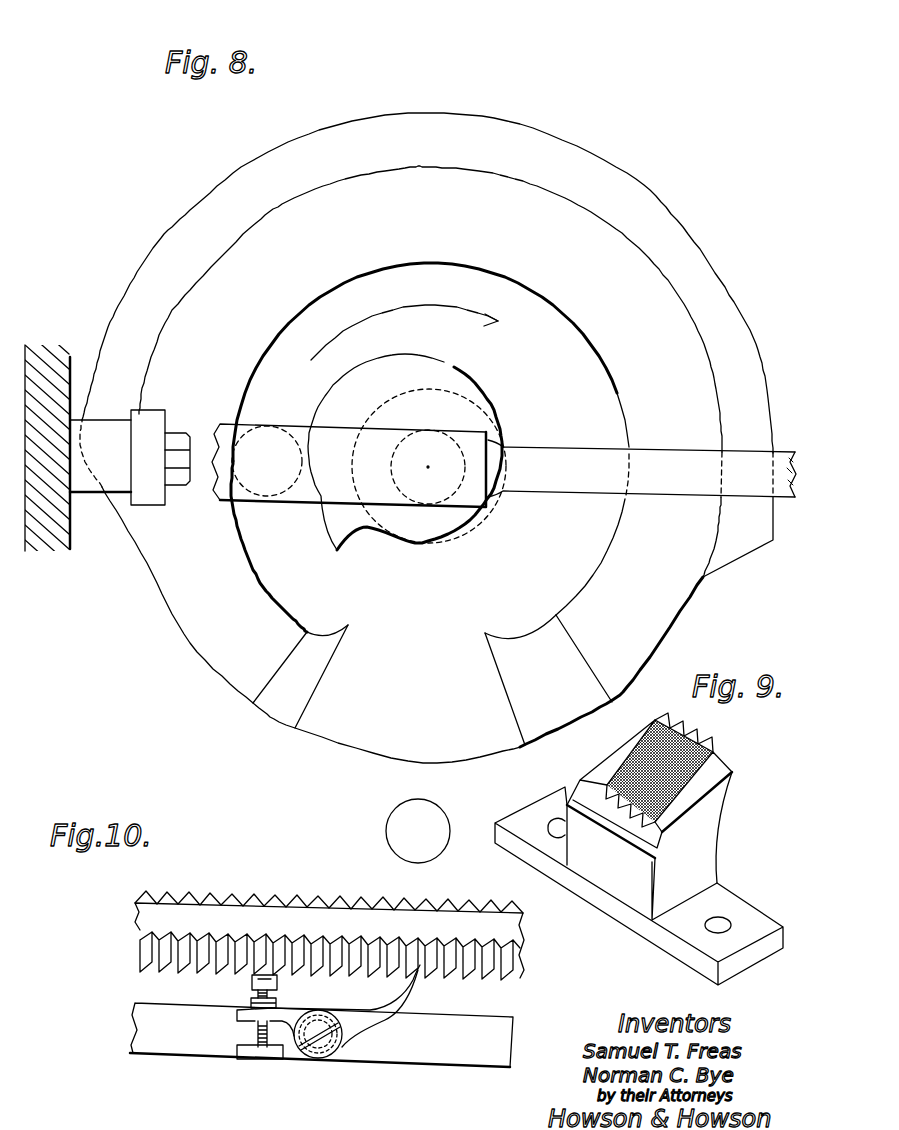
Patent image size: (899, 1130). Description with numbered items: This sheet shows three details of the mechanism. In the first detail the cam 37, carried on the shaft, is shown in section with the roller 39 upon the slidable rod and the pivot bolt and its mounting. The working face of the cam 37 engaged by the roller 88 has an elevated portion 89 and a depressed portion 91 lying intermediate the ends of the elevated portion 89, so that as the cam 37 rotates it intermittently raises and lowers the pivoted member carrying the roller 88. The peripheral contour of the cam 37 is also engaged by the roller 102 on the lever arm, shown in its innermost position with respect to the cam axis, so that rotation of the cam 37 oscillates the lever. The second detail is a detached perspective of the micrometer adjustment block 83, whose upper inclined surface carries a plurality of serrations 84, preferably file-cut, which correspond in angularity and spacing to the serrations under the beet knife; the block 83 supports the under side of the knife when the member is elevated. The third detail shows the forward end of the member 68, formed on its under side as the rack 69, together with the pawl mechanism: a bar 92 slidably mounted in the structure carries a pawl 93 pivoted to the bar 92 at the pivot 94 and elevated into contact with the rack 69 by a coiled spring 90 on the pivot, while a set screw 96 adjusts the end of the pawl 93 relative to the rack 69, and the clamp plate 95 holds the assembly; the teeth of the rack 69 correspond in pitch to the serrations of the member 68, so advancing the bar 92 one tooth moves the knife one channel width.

In FIG. 8, the cam 37 is at (210, 637).
In FIG. 8, the roller 39 is at (289, 491).
In FIG. 8, the roller 88 is at (148, 497).
In FIG. 8, the elevated portion of the cam 89 is at (263, 588).
In FIG. 8, the depressed portion of the cam 91 is at (405, 545).
In FIG. 8, the roller 102 is at (393, 811).
In FIG. 9, the block 83 is at (630, 917).
In FIG. 9, the serrations 84 is at (627, 768).
In FIG. 10, the member 68 is at (145, 914).
In FIG. 10, the rack 69 is at (150, 951).
In FIG. 10, the coiled spring 90 is at (283, 1061).
In FIG. 10, the bar 92 is at (420, 1058).
In FIG. 10, the pawl 93 is at (363, 1027).
In FIG. 10, the pivot 94 is at (318, 1048).
In FIG. 10, the clamp plate 95 is at (255, 1011).
In FIG. 10, the set screw 96 is at (257, 1032).